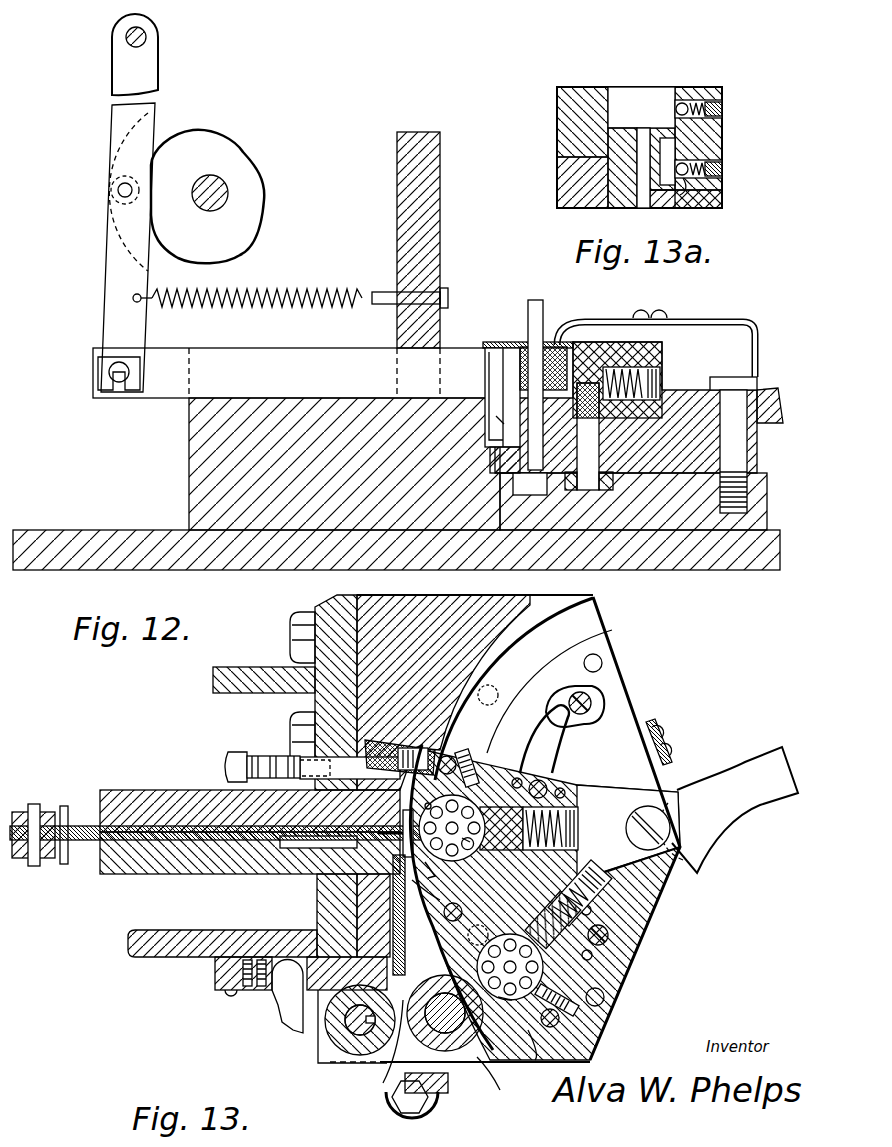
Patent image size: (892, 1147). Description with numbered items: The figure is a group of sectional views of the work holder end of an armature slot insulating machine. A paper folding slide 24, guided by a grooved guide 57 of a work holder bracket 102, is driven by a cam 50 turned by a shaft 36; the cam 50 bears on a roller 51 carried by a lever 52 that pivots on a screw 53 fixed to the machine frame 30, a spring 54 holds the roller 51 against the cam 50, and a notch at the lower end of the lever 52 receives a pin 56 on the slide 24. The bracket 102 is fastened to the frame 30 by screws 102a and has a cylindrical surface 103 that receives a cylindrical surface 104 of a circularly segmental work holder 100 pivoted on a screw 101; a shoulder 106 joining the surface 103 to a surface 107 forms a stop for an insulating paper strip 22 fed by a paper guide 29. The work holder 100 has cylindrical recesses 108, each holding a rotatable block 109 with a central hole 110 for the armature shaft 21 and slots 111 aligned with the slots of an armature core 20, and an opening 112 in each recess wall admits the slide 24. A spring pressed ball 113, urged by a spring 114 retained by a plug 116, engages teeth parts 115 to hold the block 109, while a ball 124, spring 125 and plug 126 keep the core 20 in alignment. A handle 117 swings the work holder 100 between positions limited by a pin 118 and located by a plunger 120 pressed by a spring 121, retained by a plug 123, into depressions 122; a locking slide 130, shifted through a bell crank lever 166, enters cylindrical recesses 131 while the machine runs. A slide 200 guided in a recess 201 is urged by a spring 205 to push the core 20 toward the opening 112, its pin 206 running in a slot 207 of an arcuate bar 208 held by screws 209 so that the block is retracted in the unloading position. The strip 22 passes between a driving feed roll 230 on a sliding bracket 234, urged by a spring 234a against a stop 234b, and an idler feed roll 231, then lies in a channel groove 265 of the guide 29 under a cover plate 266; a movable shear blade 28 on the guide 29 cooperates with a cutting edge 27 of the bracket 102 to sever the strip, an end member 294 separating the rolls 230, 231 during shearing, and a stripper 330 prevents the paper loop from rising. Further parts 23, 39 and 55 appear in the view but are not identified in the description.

In FIG. 12, the armature core 20 is at (547, 347).
In FIG. 12, the armature shaft 21 is at (535, 300).
In FIG. 13, the insulating paper strip 22 is at (370, 1077).
In FIG. 12, the sleeve 23 is at (510, 348).
In FIG. 12, the paper folding slide 24 is at (300, 348).
In FIG. 13, the paper folding slide 24 is at (165, 826).
In FIG. 13, the cutting edge 27 is at (435, 873).
In FIG. 13, the movable shear blade 28 is at (330, 880).
In FIG. 13, the paper guide 29 is at (360, 912).
In FIG. 12, the machine frame 30 is at (405, 176).
In FIG. 13, the machine frame 30 is at (320, 612).
In FIG. 12, the shaft 36 is at (218, 186).
In FIG. 13, the plate 39 is at (150, 930).
In FIG. 12, the cam 50 is at (257, 186).
In FIG. 12, the roller 51 is at (118, 190).
In FIG. 12, the lever 52 is at (112, 266).
In FIG. 13, the lever 52 is at (50, 812).
In FIG. 12, the screw 53 is at (127, 38).
In FIG. 12, the spring 54 is at (318, 290).
In FIG. 12, the bracket 55 is at (118, 357).
In FIG. 12, the pin 56 is at (110, 371).
In FIG. 13, the pin 56 is at (33, 866).
In FIG. 12, the grooved guide 57 is at (197, 413).
In FIG. 13, the grooved guide 57 is at (225, 873).
In FIG. 12, the work holder 100 is at (752, 446).
In FIG. 13A, the work holder 100 is at (572, 172).
In FIG. 13, the work holder 100 is at (648, 882).
In FIG. 12, the screw 101 is at (720, 378).
In FIG. 13, the screw 101 is at (650, 822).
In FIG. 12, the work holder bracket 102 is at (758, 500).
In FIG. 13, the work holder bracket 102 is at (390, 608).
In FIG. 13, the screws 102a is at (290, 636).
In FIG. 13, the cylindrical surface 103 is at (510, 660).
In FIG. 13, the cylindrical surface 104 is at (422, 892).
In FIG. 13, the shoulder 106 is at (400, 815).
In FIG. 13, the surface 107 is at (375, 846).
In FIG. 13A, the cylindrical recess 108 is at (615, 98).
In FIG. 13, the cylindrical recess 108 is at (522, 1005).
In FIG. 12, the rotatable block 109 is at (494, 476).
In FIG. 13A, the rotatable block 109 is at (625, 140).
In FIG. 13, the rotatable block 109 is at (500, 1002).
In FIG. 12, the central hole 110 is at (530, 484).
In FIG. 13A, the central hole 110 is at (642, 202).
In FIG. 13, the central hole 110 is at (481, 897).
In FIG. 12, the slots 111 is at (500, 420).
In FIG. 13, the slots 111 is at (473, 913).
In FIG. 13, the opening 112 is at (378, 832).
In FIG. 13A, the spring pressed ball 113 is at (684, 182).
In FIG. 13, the spring pressed ball 113 is at (540, 1052).
In FIG. 13A, the spring 114 is at (722, 192).
In FIG. 13, the spring 114 is at (580, 975).
In FIG. 13A, the teeth parts 115 is at (668, 140).
In FIG. 13A, the plug 116 is at (722, 172).
In FIG. 13, the plug 116 is at (465, 755).
In FIG. 12, the handle 117 is at (768, 390).
In FIG. 13, the handle 117 is at (752, 765).
In FIG. 13, the pin 118 is at (593, 654).
In FIG. 13, the plunger 120 is at (425, 742).
In FIG. 13, the spring 121 is at (388, 745).
In FIG. 13, the depressions 122 is at (482, 815).
In FIG. 13, the plug 123 is at (375, 738).
In FIG. 13A, the spring pressed ball 124 is at (683, 100).
In FIG. 13A, the spring 125 is at (698, 102).
In FIG. 13A, the plug 126 is at (722, 108).
In FIG. 13, the locking slide 130 is at (292, 757).
In FIG. 13, the cylindrical recesses 131 is at (460, 848).
In FIG. 13, the bell crank lever 166 is at (230, 760).
In FIG. 12, the slide 200 is at (582, 342).
In FIG. 13, the slide 200 is at (548, 777).
In FIG. 13, the recess 201 is at (518, 915).
In FIG. 12, the spring 205 is at (645, 380).
In FIG. 13, the spring 205 is at (566, 808).
In FIG. 12, the pin 206 is at (590, 445).
In FIG. 13, the slot 207 is at (582, 724).
In FIG. 12, the arcuate bar 208 is at (605, 488).
In FIG. 13, the arcuate bar 208 is at (606, 702).
In FIG. 13, the screws 209 is at (592, 702).
In FIG. 13, the driving feed roll 230 is at (345, 1035).
In FIG. 13, the idler feed roll 231 is at (421, 1087).
In FIG. 13, the bracket 234 is at (274, 995).
In FIG. 13, the spring 234a is at (252, 992).
In FIG. 13, the stop 234b is at (218, 975).
In FIG. 13, the channel groove 265 is at (445, 897).
In FIG. 13, the cover plate 266 is at (393, 932).
In FIG. 13, the end member 294 is at (300, 1032).
In FIG. 12, the stripper 330 is at (493, 342).